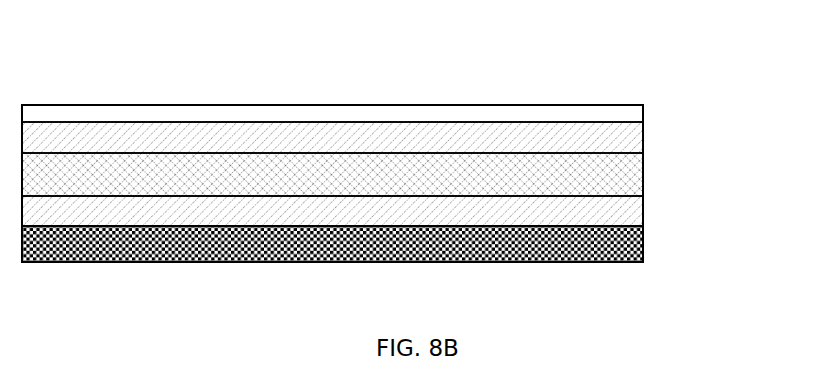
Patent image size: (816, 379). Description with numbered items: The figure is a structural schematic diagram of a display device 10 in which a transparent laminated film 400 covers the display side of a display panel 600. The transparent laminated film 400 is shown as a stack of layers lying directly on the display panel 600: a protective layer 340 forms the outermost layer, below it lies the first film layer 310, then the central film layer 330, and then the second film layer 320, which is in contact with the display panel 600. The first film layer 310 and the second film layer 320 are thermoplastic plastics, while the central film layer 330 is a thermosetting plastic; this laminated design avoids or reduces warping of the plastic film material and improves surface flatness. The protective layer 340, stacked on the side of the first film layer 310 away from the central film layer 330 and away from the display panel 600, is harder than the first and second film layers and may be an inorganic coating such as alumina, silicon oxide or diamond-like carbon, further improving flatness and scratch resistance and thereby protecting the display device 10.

The display device 10 is at (672, 40).
The transparent laminated film 400 is at (735, 100).
The protective layer 340 is at (627, 113).
The first film layer 310 is at (627, 139).
The central film layer 330 is at (627, 176).
The second film layer 320 is at (627, 213).
The display panel 600 is at (627, 251).